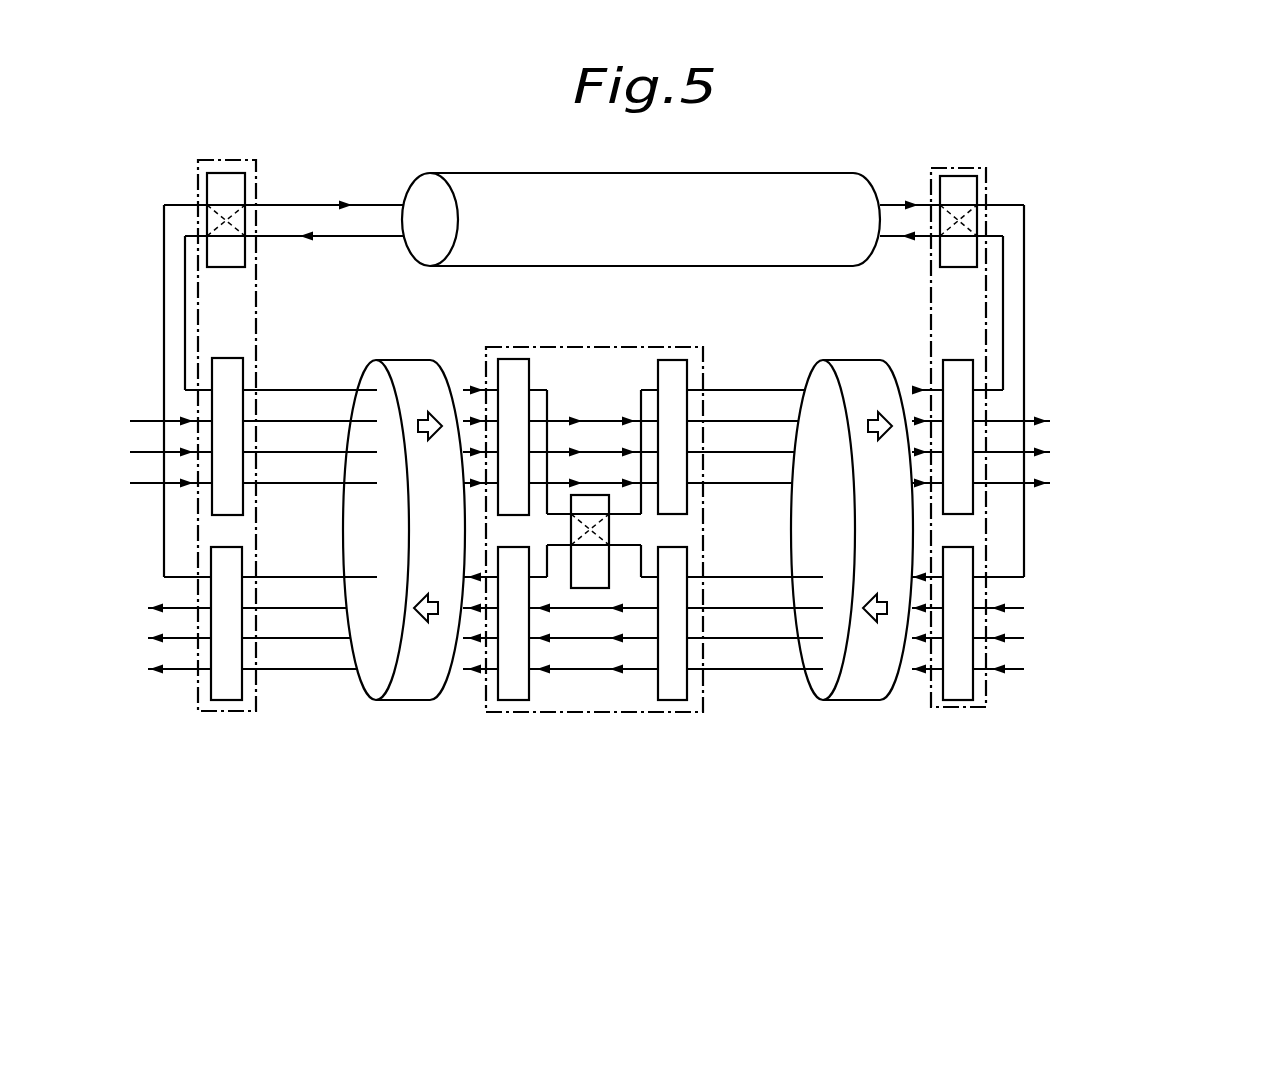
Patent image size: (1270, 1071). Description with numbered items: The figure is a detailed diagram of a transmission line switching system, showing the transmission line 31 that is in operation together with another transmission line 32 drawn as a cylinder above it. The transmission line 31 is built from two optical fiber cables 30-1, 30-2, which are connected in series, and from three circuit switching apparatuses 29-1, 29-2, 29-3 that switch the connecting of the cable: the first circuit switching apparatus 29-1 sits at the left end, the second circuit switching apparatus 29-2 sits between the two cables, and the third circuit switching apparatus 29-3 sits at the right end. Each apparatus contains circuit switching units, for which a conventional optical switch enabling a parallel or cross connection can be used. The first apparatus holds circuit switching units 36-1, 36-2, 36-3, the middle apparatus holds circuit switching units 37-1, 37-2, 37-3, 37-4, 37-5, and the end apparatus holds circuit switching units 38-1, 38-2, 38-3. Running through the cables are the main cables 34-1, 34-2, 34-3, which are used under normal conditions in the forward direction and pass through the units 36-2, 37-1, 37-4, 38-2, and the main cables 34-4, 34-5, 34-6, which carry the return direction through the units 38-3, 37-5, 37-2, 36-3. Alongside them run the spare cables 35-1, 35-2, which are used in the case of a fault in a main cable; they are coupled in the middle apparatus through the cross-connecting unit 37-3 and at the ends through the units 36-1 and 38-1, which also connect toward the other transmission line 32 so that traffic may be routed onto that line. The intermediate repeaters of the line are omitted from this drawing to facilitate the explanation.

The circuit switching apparatus 29-1 is at (200, 160).
The circuit switching apparatus 29-2 is at (600, 712).
The circuit switching apparatus 29-3 is at (986, 180).
The optical fiber cable 30-1 is at (405, 358).
The optical fiber cable 30-2 is at (838, 358).
The transmission line 31 is at (405, 760).
The another transmission line 32 is at (716, 173).
The main cable 34-1 is at (257, 421).
The main cable 34-2 is at (257, 452).
The main cable 34-3 is at (257, 483).
The main cable 34-4 is at (703, 608).
The main cable 34-5 is at (703, 638).
The main cable 34-6 is at (703, 669).
The spare cable 35-1 is at (318, 390).
The spare cable 35-2 is at (283, 577).
The circuit switching unit 36-1 is at (243, 176).
The circuit switching unit 36-2 is at (236, 358).
The circuit switching unit 36-3 is at (216, 700).
The circuit switching unit 37-1 is at (515, 358).
The circuit switching unit 37-2 is at (510, 700).
The circuit switching unit 37-3 is at (590, 570).
The circuit switching unit 37-4 is at (683, 368).
The circuit switching unit 37-5 is at (672, 700).
The circuit switching unit 38-1 is at (947, 176).
The circuit switching unit 38-2 is at (943, 365).
The circuit switching unit 38-3 is at (955, 700).